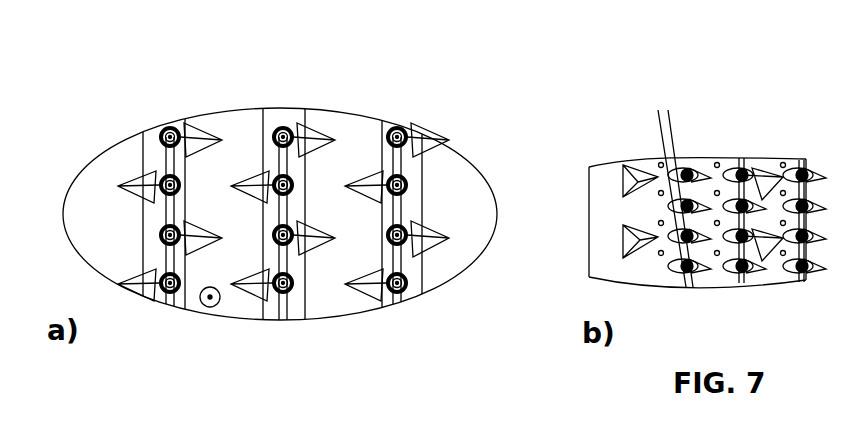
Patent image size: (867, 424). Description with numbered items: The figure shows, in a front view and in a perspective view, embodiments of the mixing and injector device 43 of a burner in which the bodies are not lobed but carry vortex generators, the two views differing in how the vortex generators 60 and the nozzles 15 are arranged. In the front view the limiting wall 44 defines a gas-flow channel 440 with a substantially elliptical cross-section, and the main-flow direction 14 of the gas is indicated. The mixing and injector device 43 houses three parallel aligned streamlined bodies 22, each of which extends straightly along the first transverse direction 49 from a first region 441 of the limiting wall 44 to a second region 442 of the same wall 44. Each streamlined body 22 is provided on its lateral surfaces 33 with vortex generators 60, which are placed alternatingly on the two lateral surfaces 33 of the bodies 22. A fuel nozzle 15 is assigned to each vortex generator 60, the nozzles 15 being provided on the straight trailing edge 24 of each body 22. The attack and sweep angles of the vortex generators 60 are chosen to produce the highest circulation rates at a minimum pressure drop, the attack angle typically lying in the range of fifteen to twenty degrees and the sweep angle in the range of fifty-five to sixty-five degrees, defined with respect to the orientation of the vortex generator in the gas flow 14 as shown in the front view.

The main-flow direction 14 is at (205, 308).
The fuel nozzle 15 is at (163, 132).
The streamlined body 22 is at (152, 221).
The straight trailing edge 24 is at (405, 205).
The lateral surface 33 is at (413, 183).
The mixing and injector device 43 is at (148, 105).
The limiting wall 44 is at (487, 243).
The first transverse direction 49 is at (285, 109).
The vortex generator 60 is at (205, 148).
The gas-flow channel 440 is at (375, 233).
The first region of the limiting wall 441 is at (267, 110).
The second region of the limiting wall 442 is at (393, 297).